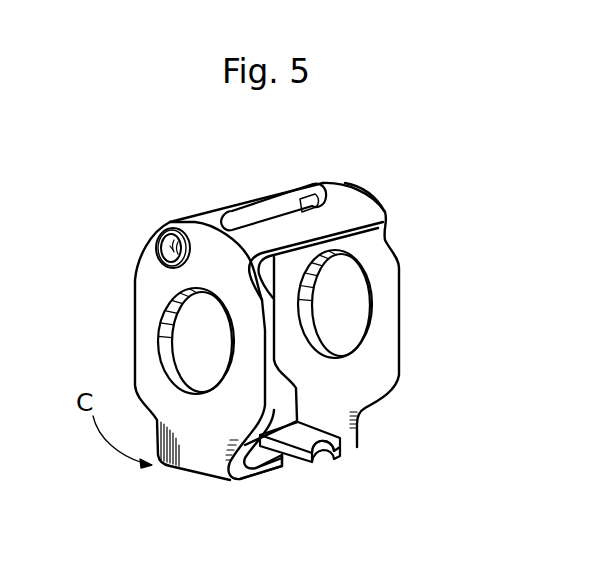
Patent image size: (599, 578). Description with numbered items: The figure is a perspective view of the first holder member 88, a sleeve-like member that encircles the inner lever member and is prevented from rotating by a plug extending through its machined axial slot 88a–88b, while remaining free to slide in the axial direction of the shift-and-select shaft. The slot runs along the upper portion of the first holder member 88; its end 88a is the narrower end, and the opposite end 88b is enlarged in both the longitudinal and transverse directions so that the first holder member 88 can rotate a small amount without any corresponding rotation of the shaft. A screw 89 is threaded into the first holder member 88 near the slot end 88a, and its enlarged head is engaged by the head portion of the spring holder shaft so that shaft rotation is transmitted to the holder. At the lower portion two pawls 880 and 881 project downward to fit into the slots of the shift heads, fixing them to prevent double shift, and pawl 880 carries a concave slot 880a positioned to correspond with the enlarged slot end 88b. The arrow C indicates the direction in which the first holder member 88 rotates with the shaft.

The first holder member 88 is at (405, 312).
The axial slot 88a is at (248, 212).
The end of the slot 88b is at (330, 208).
The screw 89 is at (161, 226).
The pawl 880 is at (302, 458).
The slot 880a is at (333, 447).
The pawl 881 is at (264, 481).